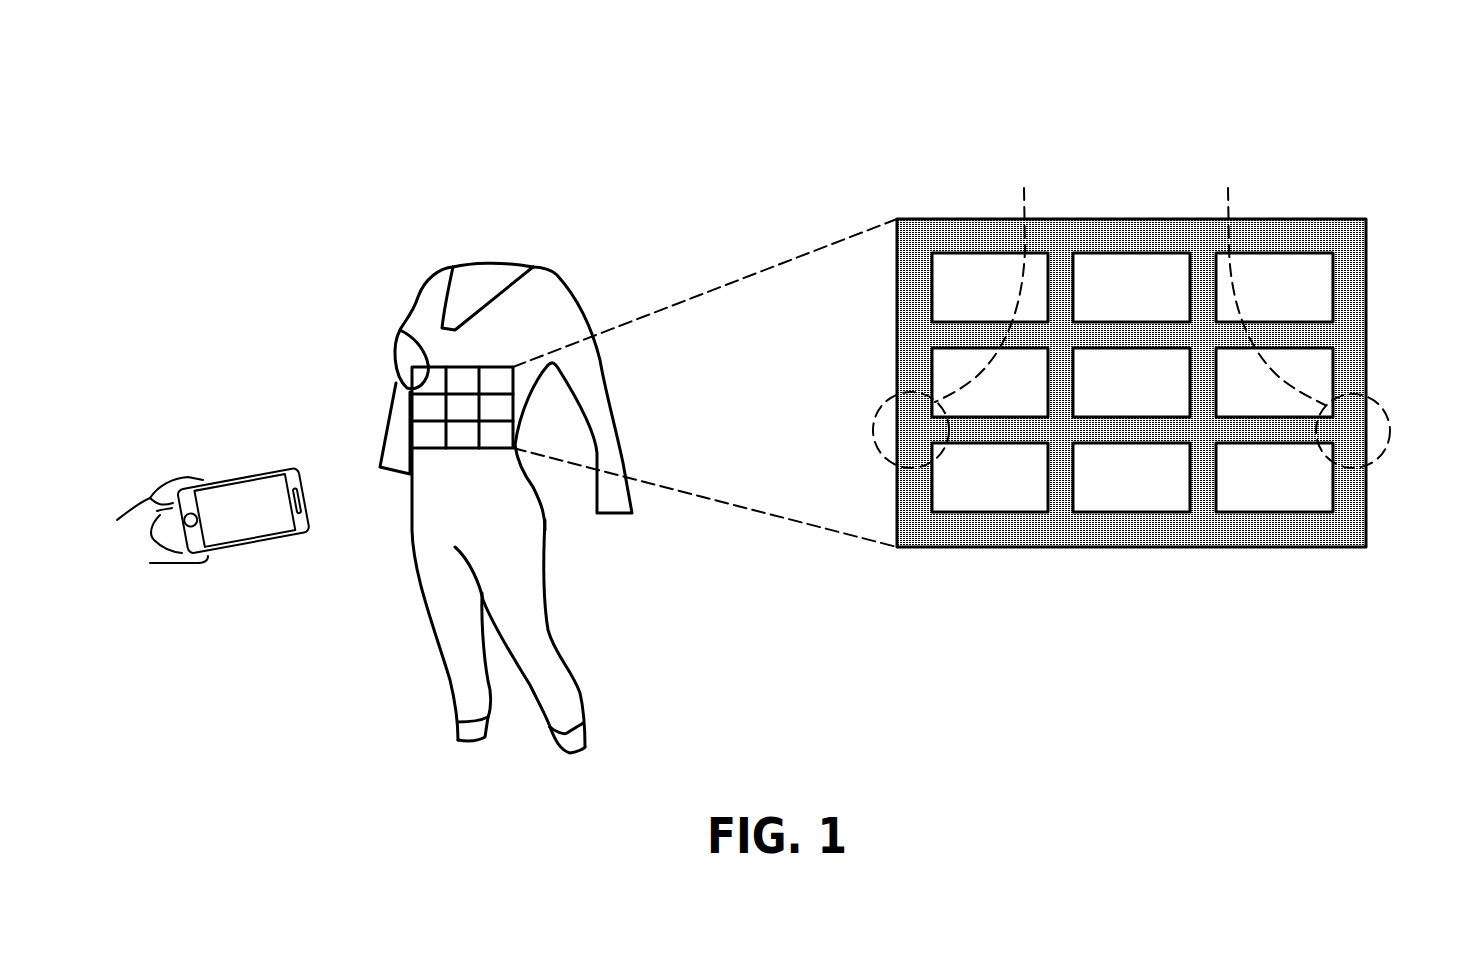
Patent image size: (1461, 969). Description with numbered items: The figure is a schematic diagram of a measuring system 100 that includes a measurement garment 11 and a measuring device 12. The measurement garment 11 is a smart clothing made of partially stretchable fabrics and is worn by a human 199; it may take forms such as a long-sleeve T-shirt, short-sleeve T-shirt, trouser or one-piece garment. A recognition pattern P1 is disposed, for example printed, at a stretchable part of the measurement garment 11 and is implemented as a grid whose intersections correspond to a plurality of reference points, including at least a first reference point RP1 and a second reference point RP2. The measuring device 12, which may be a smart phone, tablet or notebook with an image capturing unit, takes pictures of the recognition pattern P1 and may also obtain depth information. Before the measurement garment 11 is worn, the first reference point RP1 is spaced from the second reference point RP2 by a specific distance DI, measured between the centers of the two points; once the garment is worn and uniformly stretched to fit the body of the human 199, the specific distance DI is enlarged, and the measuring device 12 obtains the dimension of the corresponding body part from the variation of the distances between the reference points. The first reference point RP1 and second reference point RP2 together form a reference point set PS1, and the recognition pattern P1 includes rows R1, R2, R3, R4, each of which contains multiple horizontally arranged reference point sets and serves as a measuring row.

The measuring system 100 is at (1406, 768).
The measurement garment 11 is at (560, 297).
The measuring device 12 is at (427, 366).
The human 199 is at (488, 273).
The recognition pattern P1 is at (924, 172).
The reference point set PS1 is at (1255, 143).
The first reference point RP1 is at (990, 273).
The second reference point RP2 is at (1265, 275).
The row R1 is at (1367, 240).
The row R2 is at (1367, 335).
The row R3 is at (1367, 432).
The row R4 is at (1367, 530).
The specific distance DI is at (1348, 603).